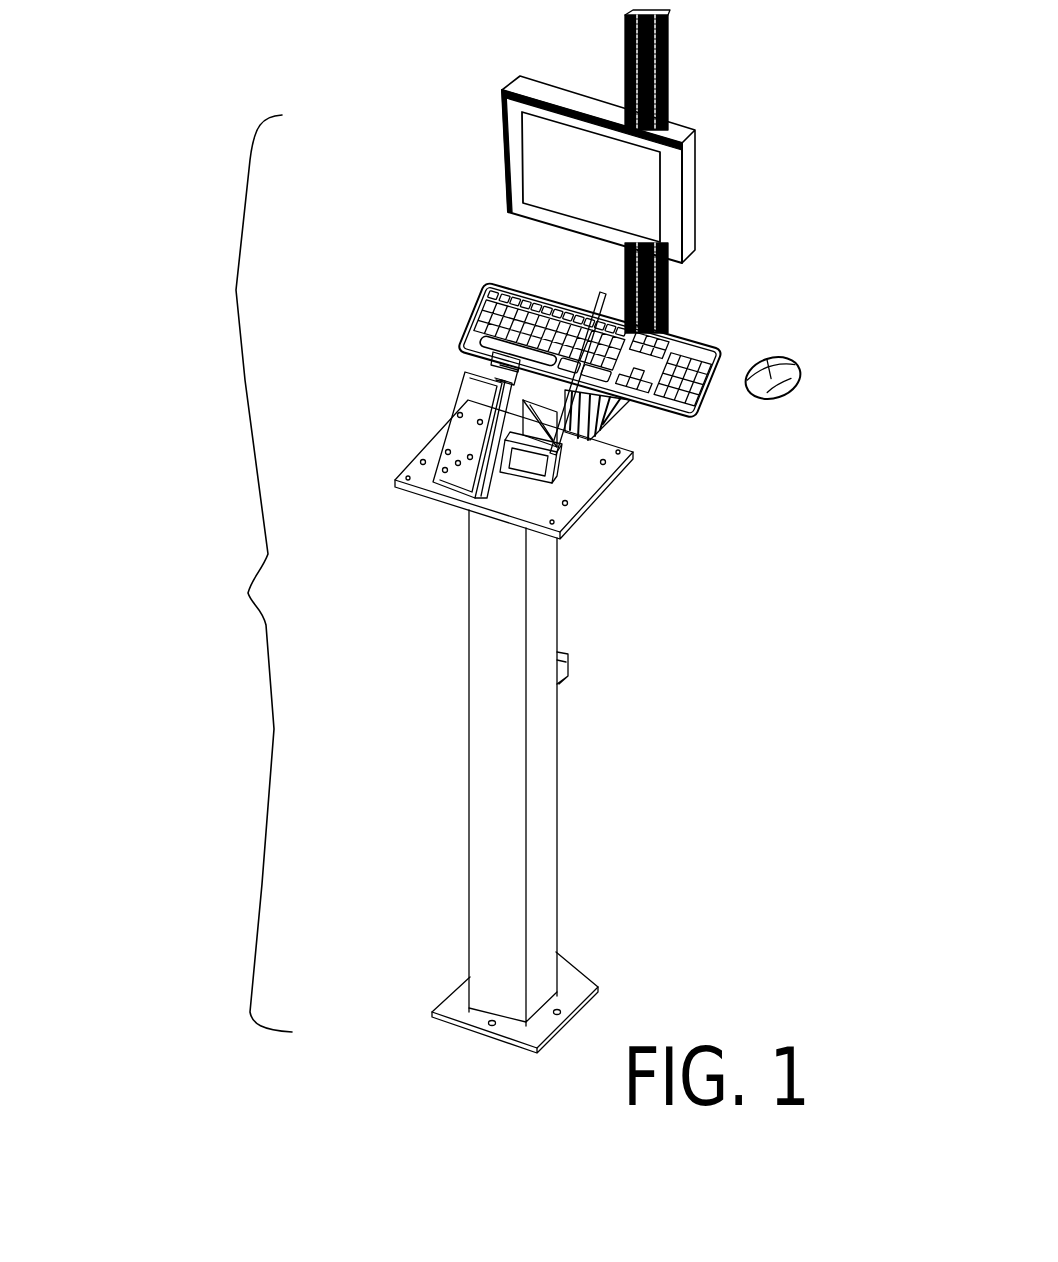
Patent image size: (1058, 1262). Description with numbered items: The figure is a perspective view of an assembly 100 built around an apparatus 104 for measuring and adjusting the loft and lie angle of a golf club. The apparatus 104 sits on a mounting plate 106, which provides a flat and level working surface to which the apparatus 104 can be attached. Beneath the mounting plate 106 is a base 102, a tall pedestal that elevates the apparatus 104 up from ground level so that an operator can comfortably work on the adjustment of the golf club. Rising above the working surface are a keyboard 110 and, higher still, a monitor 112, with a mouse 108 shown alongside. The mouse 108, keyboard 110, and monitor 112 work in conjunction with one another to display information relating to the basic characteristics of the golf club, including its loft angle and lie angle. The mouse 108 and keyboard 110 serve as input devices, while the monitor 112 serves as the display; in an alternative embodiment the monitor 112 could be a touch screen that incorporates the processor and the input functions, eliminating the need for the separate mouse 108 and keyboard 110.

The assembly 100 is at (217, 591).
The base 102 is at (558, 797).
The apparatus 104 is at (402, 397).
The mounting plate 106 is at (613, 490).
The mouse 108 is at (803, 372).
The keyboard 110 is at (700, 333).
The monitor 112 is at (692, 160).